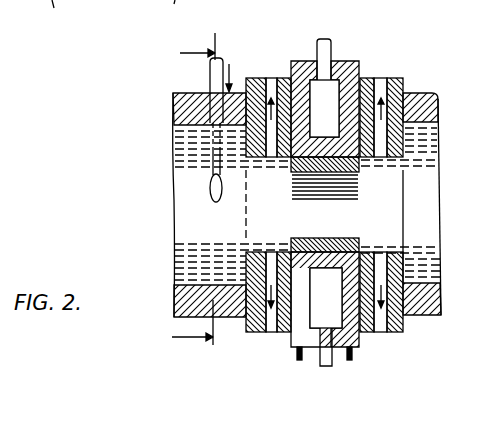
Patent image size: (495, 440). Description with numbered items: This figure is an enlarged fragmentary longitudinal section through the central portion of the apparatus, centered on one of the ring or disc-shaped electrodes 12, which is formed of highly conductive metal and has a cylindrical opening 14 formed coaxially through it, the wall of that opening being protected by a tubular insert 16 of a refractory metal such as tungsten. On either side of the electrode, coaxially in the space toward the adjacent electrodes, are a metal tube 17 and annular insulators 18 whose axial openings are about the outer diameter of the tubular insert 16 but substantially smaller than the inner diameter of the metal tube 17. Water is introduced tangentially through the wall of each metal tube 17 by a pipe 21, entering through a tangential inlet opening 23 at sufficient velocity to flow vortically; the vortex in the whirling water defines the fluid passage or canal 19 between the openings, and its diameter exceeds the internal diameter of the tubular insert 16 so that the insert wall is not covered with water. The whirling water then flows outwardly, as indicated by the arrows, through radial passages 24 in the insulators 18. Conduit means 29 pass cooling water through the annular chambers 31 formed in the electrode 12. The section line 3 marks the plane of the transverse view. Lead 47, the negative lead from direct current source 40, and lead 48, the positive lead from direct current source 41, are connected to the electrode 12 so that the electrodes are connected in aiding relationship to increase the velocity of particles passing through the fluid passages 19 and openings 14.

The section line 3- 3 is at (181, 194).
The electrode 12 is at (304, 61).
The cylindrical opening 14 is at (308, 238).
The tubular insert 16 is at (340, 238).
The metal tube 17 is at (173, 112).
The annular insulator 18 is at (258, 78).
The fluid passage 19 is at (200, 231).
The pipe 21 is at (210, 84).
The tangential inlet opening 23 is at (211, 192).
The radial passage 24 is at (381, 78).
The conduit means 29 is at (327, 40).
The annular chamber 31 is at (332, 92).
The direct current source 40 is at (49, 17).
The direct current source 41 is at (144, 13).
The lead 47 is at (297, 357).
The lead 48 is at (352, 355).